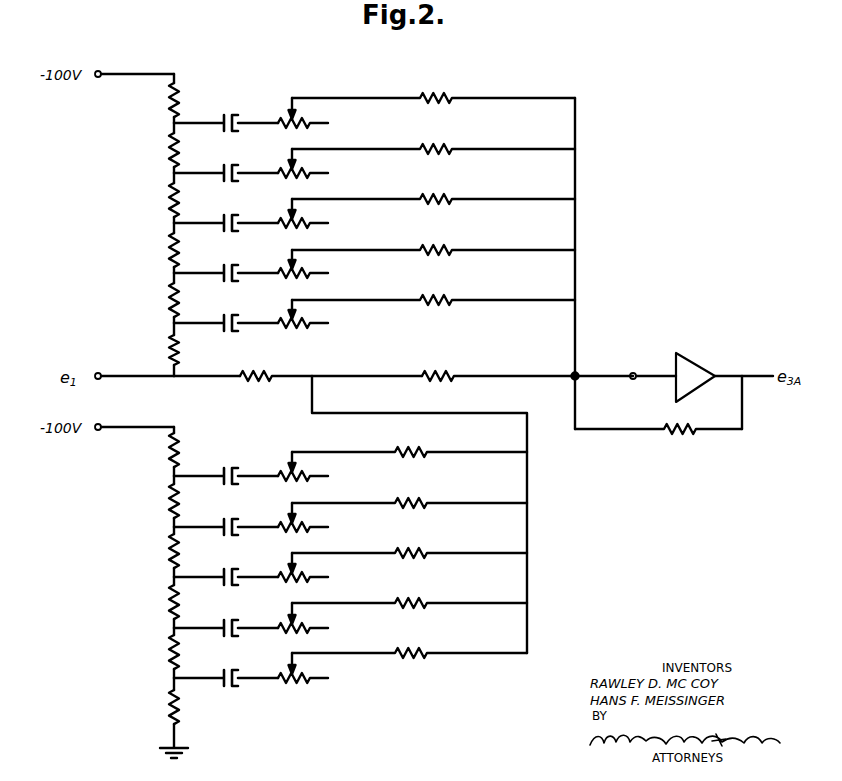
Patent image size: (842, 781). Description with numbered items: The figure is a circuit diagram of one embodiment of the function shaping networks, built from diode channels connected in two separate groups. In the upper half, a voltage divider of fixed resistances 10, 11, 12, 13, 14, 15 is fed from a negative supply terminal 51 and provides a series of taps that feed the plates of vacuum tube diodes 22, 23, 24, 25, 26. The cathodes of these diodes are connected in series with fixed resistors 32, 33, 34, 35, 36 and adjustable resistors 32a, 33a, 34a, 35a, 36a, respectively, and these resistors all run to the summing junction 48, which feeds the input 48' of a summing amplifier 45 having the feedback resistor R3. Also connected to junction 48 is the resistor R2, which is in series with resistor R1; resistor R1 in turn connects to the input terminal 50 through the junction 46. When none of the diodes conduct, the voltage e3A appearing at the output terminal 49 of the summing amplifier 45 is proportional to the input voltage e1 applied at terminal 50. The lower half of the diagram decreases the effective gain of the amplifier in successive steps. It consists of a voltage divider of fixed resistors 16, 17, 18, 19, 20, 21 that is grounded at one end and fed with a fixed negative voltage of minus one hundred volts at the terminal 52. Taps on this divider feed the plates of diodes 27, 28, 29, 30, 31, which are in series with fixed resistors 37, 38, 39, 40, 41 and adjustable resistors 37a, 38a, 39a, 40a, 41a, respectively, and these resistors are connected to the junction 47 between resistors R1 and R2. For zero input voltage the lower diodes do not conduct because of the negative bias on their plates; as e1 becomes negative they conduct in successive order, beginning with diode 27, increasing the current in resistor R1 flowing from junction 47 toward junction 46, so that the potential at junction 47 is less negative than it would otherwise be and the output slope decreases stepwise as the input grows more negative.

The fixed resistance 10 is at (162, 350).
The fixed resistance 11 is at (162, 300).
The fixed resistance 12 is at (162, 250).
The fixed resistance 13 is at (162, 200).
The fixed resistance 14 is at (162, 150).
The fixed resistance 15 is at (162, 100).
The fixed resistor 16 is at (162, 707).
The fixed resistor 17 is at (162, 652).
The fixed resistor 18 is at (162, 602).
The fixed resistor 19 is at (162, 551).
The fixed resistor 20 is at (162, 501).
The fixed resistor 21 is at (162, 450).
The vacuum tube diode 22 is at (226, 334).
The vacuum tube diode 23 is at (226, 284).
The vacuum tube diode 24 is at (226, 234).
The vacuum tube diode 25 is at (226, 184).
The vacuum tube diode 26 is at (226, 134).
The diode 27 is at (226, 689).
The diode 28 is at (226, 639).
The diode 29 is at (226, 587).
The diode 30 is at (226, 538).
The diode 31 is at (226, 487).
The fixed resistor 32 is at (433, 310).
The fixed resistor 33 is at (433, 260).
The fixed resistor 34 is at (433, 209).
The fixed resistor 35 is at (433, 159).
The fixed resistor 36 is at (433, 108).
The fixed resistor 37 is at (409, 663).
The fixed resistor 38 is at (409, 613).
The fixed resistor 39 is at (409, 563).
The fixed resistor 40 is at (409, 513).
The fixed resistor 41 is at (409, 462).
The adjustable resistor 32a is at (303, 323).
The adjustable resistor 33a is at (303, 273).
The adjustable resistor 34a is at (303, 223).
The adjustable resistor 35a is at (303, 173).
The adjustable resistor 36a is at (303, 122).
The adjustable resistor 37a is at (303, 677).
The adjustable resistor 38a is at (303, 627).
The adjustable resistor 39a is at (303, 577).
The adjustable resistor 40a is at (303, 527).
The adjustable resistor 41a is at (303, 476).
The summing amplifier 45 is at (709, 377).
The junction 46 is at (174, 378).
The junction 47 is at (312, 376).
The summing junction 48 is at (590, 365).
The input of summing amplifier 48' is at (649, 361).
The output terminal 49 is at (742, 373).
The input terminal 50 is at (100, 373).
The voltage terminal 51 is at (100, 71).
The terminal 52 is at (105, 417).
The resistor R1 is at (276, 366).
The resistor R2 is at (498, 366).
The feedback resistor R3 is at (658, 420).